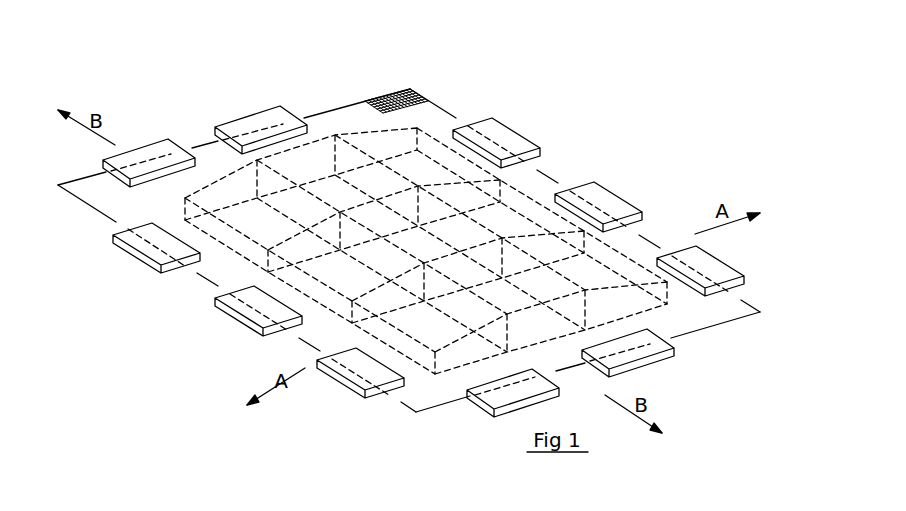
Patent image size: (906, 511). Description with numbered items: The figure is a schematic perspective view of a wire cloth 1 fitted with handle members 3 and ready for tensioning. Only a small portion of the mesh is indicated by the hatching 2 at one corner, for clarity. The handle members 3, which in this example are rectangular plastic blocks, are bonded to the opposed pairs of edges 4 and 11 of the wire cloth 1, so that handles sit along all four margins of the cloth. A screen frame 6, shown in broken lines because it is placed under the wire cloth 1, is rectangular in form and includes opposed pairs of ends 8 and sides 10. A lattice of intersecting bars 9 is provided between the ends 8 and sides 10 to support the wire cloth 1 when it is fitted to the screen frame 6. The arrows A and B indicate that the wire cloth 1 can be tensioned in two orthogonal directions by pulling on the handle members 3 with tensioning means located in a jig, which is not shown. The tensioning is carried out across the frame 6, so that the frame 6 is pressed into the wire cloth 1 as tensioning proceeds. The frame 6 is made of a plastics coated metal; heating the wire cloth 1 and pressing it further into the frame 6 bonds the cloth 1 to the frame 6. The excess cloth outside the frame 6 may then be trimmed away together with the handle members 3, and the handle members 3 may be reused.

The wire cloth 1 is at (409, 244).
The hatching 2 is at (386, 92).
The handle members 3 is at (147, 158).
The edges 4 is at (402, 223).
The screen frame 6 is at (448, 358).
The ends 8 is at (477, 260).
The lattice of intersecting bars 9 is at (362, 178).
The sides 10 is at (515, 200).
The edges 11 is at (310, 112).